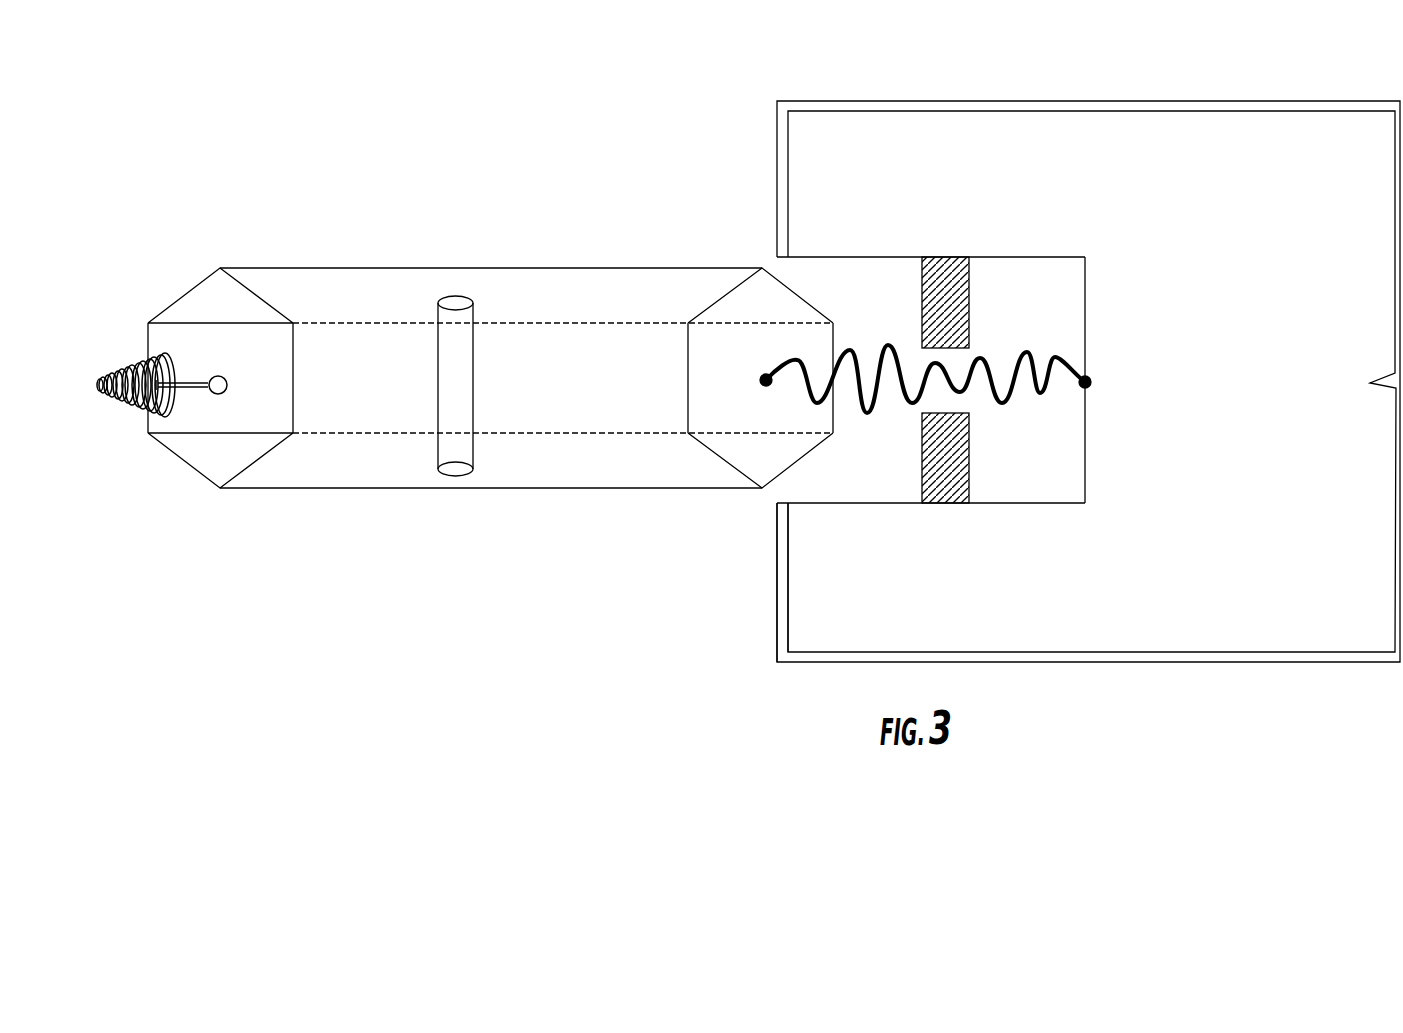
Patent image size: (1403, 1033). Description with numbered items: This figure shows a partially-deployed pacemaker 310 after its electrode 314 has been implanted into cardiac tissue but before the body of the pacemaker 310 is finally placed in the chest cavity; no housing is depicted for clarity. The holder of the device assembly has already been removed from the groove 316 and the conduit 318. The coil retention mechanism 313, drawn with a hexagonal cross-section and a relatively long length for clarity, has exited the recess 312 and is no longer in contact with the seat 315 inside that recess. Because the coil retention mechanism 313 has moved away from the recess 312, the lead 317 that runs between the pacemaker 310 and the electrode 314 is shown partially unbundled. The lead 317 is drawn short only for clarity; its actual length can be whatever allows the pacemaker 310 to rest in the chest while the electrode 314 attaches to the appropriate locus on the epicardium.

The pacemaker 310 is at (1190, 632).
The recess 312 is at (1016, 287).
The coil retention mechanism 313 is at (661, 283).
The electrode 314 is at (142, 366).
The seat 315 is at (940, 283).
The groove 316 is at (784, 574).
The lead 317 is at (1040, 395).
The conduit 318 is at (455, 303).